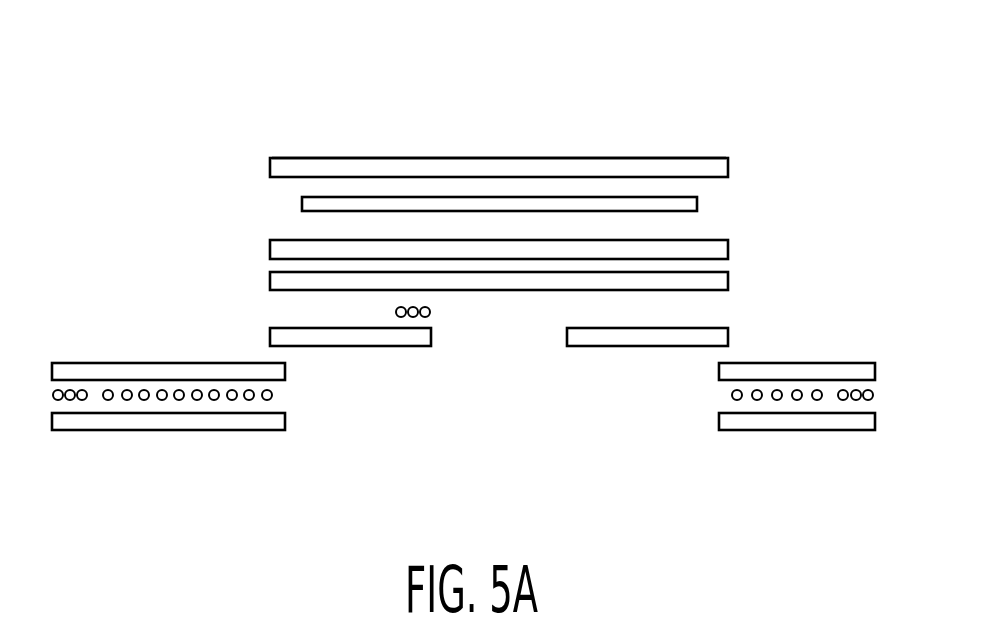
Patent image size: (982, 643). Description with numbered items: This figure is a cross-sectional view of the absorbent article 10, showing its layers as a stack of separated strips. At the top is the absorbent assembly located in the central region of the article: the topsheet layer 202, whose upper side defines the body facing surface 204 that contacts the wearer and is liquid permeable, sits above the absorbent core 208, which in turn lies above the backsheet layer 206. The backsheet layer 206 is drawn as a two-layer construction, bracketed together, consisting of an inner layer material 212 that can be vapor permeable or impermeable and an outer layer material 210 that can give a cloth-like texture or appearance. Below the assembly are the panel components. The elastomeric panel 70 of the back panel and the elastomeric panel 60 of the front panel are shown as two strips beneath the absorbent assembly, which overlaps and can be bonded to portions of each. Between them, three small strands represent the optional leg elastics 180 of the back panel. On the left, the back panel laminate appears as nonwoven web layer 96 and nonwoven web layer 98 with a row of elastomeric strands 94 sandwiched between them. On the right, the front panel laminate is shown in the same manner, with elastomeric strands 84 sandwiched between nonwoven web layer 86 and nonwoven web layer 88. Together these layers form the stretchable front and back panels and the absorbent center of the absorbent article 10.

The absorbent article 10 is at (792, 95).
The topsheet layer 202 is at (728, 167).
The body facing surface 204 is at (553, 157).
The absorbent core 208 is at (697, 205).
The backsheet layer 206 is at (736, 240).
The inner layer material 212 is at (276, 250).
The outer layer material 210 is at (277, 280).
The leg elastics 180 is at (432, 312).
The elastomeric panel 70 is at (365, 336).
The elastomeric panel 60 is at (722, 337).
The nonwoven web layer 96 is at (128, 373).
The nonwoven web layer 98 is at (147, 420).
The elastomeric strands 94 is at (52, 395).
The nonwoven web layer 86 is at (822, 370).
The nonwoven web layer 88 is at (785, 420).
The elastomeric strands 84 is at (755, 400).